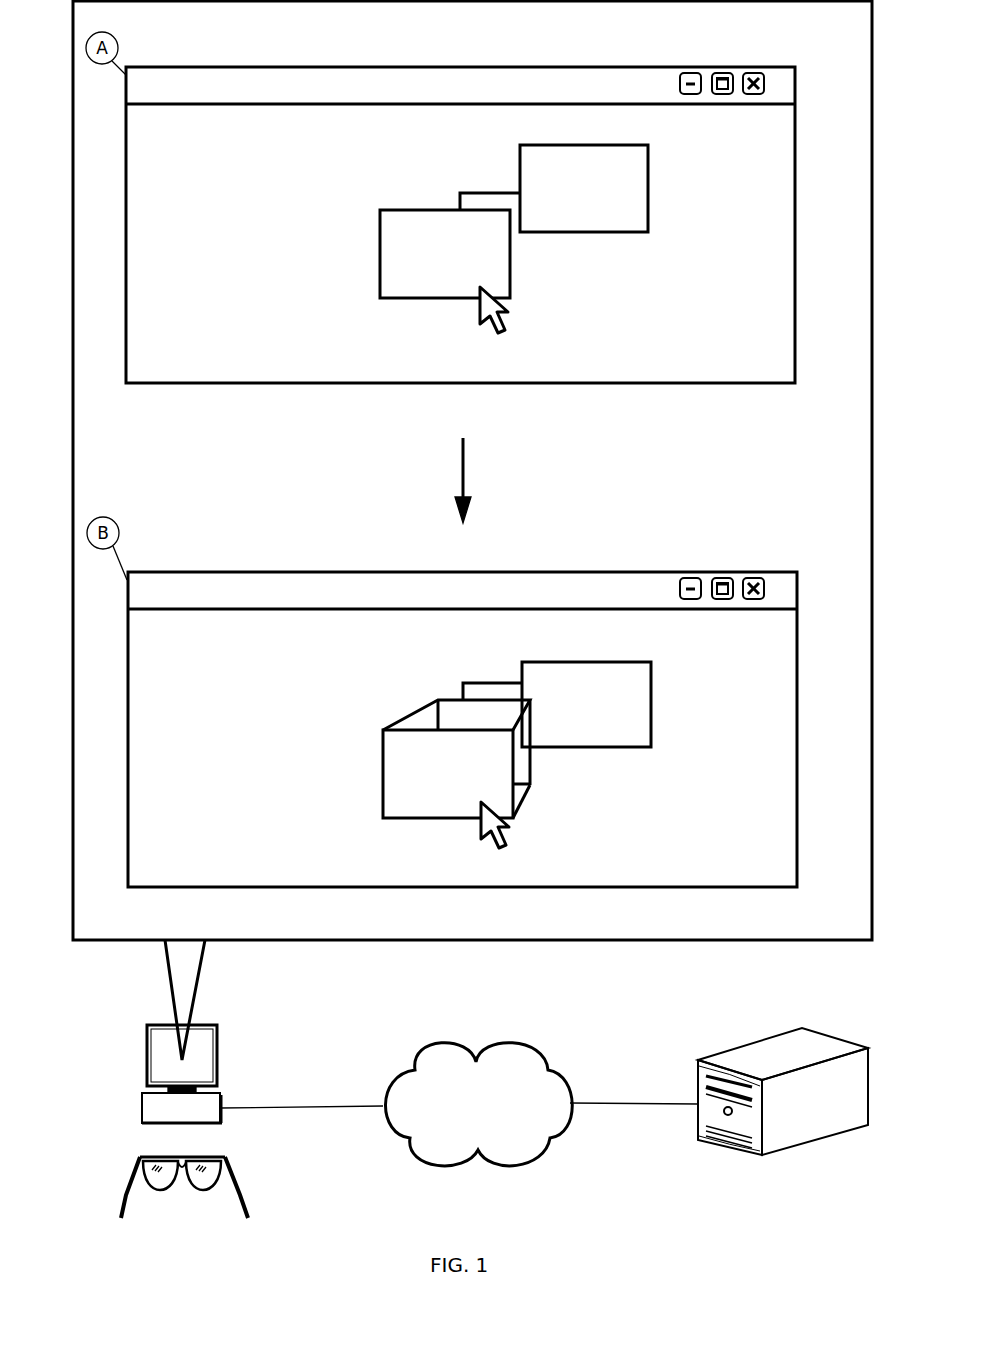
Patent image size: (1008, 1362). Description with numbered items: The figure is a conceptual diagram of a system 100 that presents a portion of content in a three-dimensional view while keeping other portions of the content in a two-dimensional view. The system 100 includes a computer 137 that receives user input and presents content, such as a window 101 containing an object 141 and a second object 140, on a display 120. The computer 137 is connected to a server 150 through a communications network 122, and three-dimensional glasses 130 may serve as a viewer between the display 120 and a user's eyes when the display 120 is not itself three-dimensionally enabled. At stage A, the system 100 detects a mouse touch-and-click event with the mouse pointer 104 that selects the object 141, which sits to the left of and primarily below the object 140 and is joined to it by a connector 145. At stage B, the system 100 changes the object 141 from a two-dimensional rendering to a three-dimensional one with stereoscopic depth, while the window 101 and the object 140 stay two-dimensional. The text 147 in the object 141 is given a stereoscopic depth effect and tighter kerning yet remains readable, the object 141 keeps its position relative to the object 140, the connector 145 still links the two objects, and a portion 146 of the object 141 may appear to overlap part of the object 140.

The system 100 is at (122, 999).
The window 101 is at (247, 73).
The mouse pointer 104 is at (503, 333).
The display 120 is at (214, 1052).
The communications network 122 is at (478, 1046).
The 3D glasses 130 is at (118, 1202).
The computer 137 is at (140, 1118).
The object 140 is at (652, 202).
The object 141 is at (485, 485).
The connector 145 is at (475, 192).
The portion 146 is at (531, 725).
The text 147 is at (445, 276).
The server 150 is at (718, 1048).